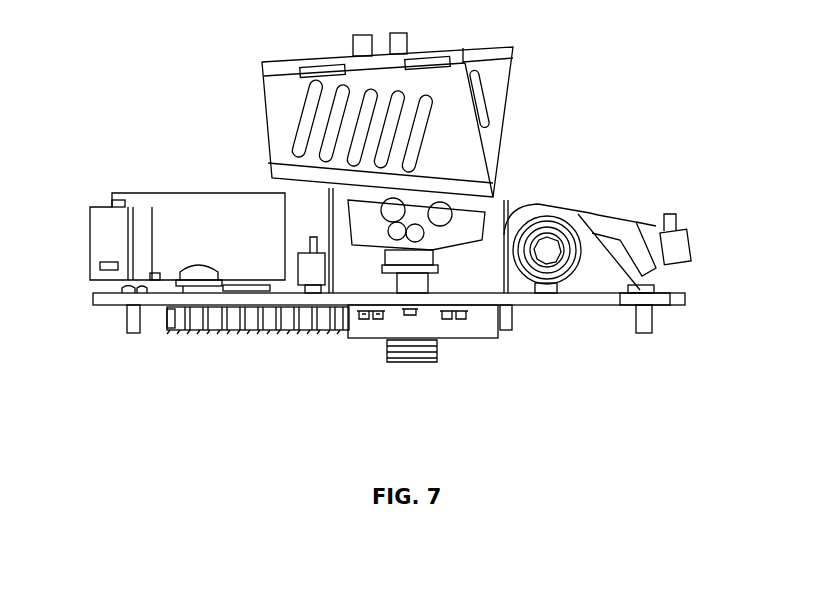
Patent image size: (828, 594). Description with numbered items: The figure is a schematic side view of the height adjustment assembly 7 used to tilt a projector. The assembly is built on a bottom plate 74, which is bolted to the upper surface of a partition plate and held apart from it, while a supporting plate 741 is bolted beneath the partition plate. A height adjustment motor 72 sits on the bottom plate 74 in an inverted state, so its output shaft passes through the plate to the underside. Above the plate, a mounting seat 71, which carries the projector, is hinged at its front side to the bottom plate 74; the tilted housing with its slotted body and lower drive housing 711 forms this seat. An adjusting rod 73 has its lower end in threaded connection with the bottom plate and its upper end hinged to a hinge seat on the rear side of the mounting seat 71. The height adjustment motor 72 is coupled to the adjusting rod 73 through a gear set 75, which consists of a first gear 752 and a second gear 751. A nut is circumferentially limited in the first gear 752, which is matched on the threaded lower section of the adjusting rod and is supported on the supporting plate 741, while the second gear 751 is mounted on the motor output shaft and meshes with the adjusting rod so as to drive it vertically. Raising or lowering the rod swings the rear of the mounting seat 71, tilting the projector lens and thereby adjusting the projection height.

The height adjustment assembly 7 is at (607, 385).
The mounting seat 71 is at (455, 147).
The drive housing 711 is at (482, 212).
The height adjustment motor 72 is at (253, 238).
The adjusting rod 73 is at (430, 298).
The bottom plate 74 is at (143, 297).
The gear set 75 is at (247, 368).
The second gear 751 is at (232, 323).
The first gear 752 is at (333, 330).
The supporting plate 741 is at (378, 315).